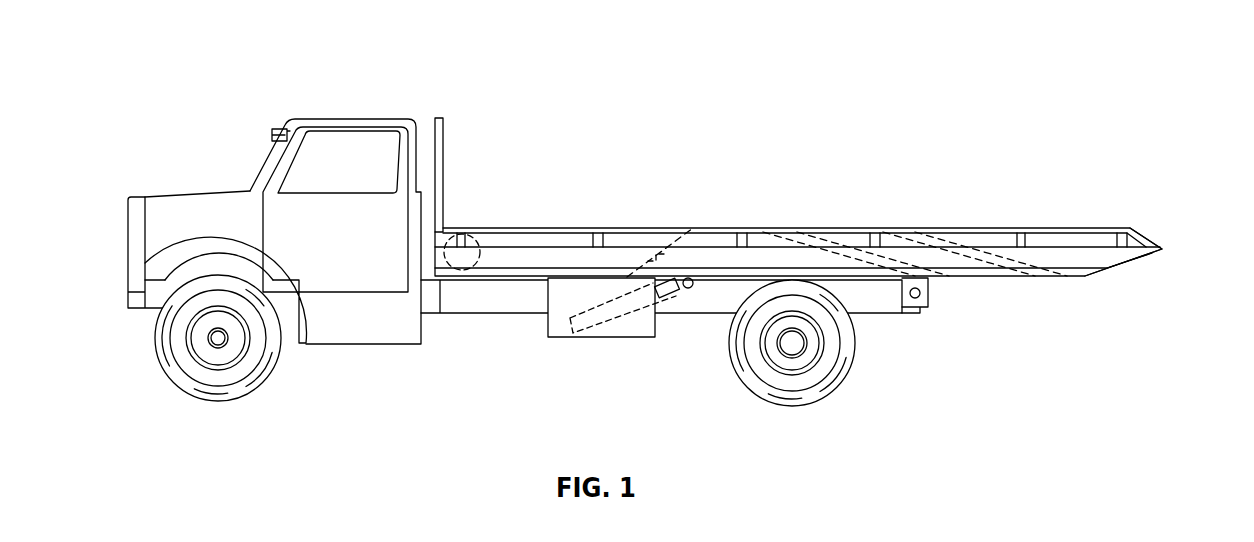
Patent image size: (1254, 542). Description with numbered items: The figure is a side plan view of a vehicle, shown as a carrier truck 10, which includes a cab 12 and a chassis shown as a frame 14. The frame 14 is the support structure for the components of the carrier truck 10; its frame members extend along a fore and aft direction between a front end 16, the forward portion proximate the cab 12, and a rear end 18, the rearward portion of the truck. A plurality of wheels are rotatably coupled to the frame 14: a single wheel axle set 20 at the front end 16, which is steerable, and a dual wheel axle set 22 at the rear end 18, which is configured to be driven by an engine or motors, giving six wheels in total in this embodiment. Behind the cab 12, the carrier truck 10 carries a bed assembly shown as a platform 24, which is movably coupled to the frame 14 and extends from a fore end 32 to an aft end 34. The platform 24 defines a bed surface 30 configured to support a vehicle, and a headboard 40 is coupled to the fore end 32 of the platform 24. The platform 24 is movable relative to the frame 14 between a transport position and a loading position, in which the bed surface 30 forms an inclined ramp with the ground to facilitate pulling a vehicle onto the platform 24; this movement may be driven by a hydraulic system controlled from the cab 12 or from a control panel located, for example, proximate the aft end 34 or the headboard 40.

The carrier truck 10 is at (643, 215).
The cab 12 is at (231, 191).
The frame 14 is at (518, 318).
The front end 16 is at (112, 345).
The rear end 18 is at (1175, 314).
The single wheel axle set 20 is at (201, 393).
The dual wheel axle set 22 is at (829, 388).
The platform 24 is at (756, 231).
The bed surface 30 is at (990, 245).
The fore end 32 is at (481, 229).
The aft end 34 is at (1144, 246).
The headboard 40 is at (446, 132).